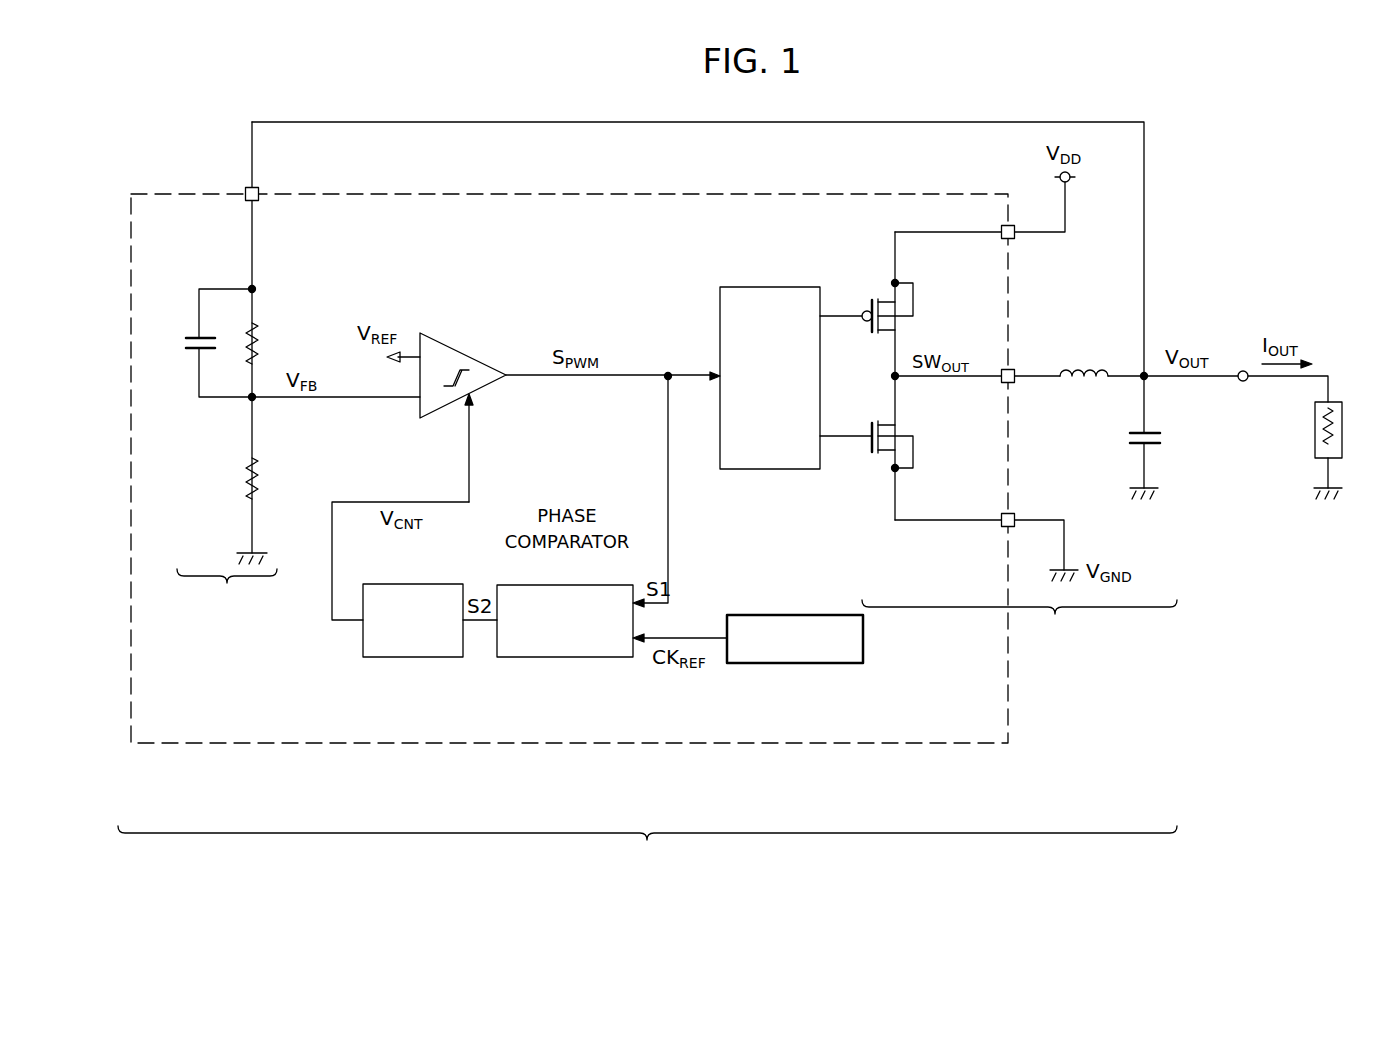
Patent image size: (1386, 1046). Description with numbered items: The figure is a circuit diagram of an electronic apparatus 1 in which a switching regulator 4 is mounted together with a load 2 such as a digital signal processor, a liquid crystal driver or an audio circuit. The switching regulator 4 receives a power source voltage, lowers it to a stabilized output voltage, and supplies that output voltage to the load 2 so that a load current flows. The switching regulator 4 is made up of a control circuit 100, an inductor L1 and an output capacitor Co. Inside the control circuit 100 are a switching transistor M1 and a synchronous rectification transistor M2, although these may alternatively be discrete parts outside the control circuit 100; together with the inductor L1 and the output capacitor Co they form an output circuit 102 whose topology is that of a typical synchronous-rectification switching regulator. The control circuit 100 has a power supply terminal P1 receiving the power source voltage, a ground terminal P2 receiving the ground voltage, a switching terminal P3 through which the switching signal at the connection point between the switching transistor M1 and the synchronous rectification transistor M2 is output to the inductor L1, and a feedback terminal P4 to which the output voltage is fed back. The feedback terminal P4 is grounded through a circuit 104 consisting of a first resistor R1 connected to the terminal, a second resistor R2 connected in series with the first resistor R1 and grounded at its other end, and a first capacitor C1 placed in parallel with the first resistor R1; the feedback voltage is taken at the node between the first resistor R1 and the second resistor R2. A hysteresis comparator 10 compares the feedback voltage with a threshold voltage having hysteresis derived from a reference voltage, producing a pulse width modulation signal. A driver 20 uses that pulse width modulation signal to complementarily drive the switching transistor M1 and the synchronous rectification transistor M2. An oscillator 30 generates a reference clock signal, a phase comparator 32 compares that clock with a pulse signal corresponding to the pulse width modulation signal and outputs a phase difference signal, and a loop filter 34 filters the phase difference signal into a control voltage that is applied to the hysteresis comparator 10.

The power supply system 1 is at (1358, 210).
The load 2 is at (1344, 432).
The switching regulator 4 is at (647, 850).
The hysteresis comparator 10 is at (452, 344).
The driver 20 is at (757, 287).
The oscillator 30 is at (773, 664).
The phase comparator 32 is at (557, 658).
The loop filter 34 is at (414, 658).
The control circuit 100 is at (539, 745).
The output circuit 102 is at (1019, 623).
The circuit 104 is at (227, 592).
The power supply terminal P1 is at (1016, 223).
The ground terminal P2 is at (1016, 511).
The switching terminal P3 is at (1016, 367).
The feedback terminal P4 is at (259, 186).
The switching transistor M1 is at (872, 292).
The synchronous rectification transistor M2 is at (872, 458).
The first resistor R1 is at (268, 334).
The second resistor R2 is at (240, 490).
The first capacitor C1 is at (186, 342).
The inductor L1 is at (1080, 386).
The output capacitor Co is at (1166, 438).